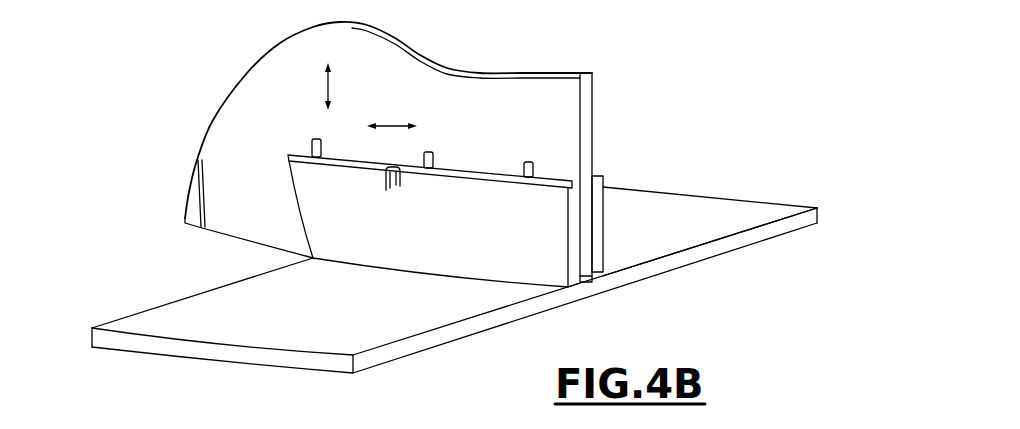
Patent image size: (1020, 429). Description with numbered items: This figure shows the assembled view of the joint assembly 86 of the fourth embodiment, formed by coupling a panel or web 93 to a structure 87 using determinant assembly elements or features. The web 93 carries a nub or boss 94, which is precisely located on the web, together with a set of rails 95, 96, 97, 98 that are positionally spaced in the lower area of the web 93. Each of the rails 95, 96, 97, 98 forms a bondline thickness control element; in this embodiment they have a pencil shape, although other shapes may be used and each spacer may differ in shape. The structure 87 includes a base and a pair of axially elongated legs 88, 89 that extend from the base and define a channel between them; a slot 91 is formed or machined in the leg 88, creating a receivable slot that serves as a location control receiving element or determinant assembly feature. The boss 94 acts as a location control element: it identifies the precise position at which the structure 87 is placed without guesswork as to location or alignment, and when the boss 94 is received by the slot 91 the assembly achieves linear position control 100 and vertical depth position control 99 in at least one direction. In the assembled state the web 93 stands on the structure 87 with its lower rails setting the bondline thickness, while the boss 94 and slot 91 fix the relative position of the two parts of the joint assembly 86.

The joint assembly 86 is at (157, 252).
The structure 87 is at (248, 293).
The leg 88 is at (574, 230).
The leg 89 is at (603, 195).
The slot 91 is at (383, 184).
The web 93 is at (573, 73).
The boss 94 is at (389, 192).
The rail 95 is at (533, 165).
The rail 96 is at (433, 160).
The rail 97 is at (313, 140).
The rail 98 is at (203, 180).
The vertical depth position control 99 is at (331, 80).
The linear position control 100 is at (392, 125).